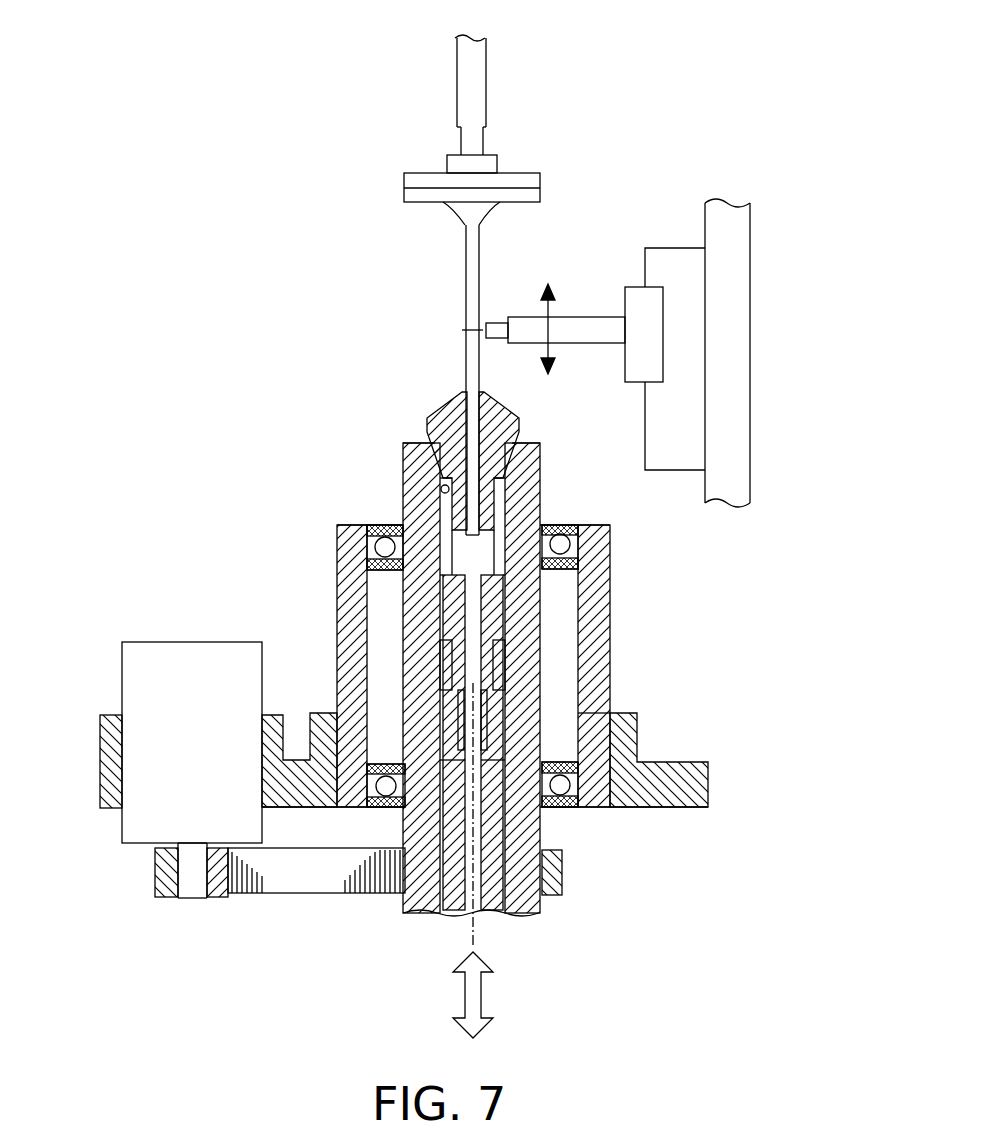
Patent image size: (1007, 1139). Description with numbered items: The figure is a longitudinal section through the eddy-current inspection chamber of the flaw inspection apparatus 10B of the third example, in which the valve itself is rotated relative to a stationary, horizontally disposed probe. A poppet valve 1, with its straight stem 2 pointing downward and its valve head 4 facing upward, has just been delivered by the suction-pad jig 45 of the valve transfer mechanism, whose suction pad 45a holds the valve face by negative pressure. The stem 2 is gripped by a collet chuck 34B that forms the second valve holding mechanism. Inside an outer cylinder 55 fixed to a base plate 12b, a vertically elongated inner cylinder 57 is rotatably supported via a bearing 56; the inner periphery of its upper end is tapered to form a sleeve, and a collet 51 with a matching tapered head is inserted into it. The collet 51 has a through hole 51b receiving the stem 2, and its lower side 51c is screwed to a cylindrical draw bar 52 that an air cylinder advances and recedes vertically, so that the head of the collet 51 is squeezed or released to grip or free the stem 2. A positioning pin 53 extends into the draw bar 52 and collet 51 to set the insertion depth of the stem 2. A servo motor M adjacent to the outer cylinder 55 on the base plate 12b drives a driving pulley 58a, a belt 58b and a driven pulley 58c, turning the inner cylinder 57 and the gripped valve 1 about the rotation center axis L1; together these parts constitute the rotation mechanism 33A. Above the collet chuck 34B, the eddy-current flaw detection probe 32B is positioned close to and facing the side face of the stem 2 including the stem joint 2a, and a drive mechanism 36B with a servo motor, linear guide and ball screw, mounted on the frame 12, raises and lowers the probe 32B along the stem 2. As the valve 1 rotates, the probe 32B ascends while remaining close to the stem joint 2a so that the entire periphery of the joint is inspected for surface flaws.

The apparatus for flaw inspection 10B is at (242, 43).
The suction-pad jig 45 is at (523, 112).
The suction pad 45a is at (542, 193).
The valve head 4 is at (453, 212).
The poppet valve 1 is at (487, 239).
The stem 2 is at (462, 290).
The stem joint 2a is at (466, 330).
The eddy-current flaw detection probe 32B is at (496, 318).
The drive mechanism 36B is at (675, 335).
The frame 12 is at (752, 428).
The collet chuck 34B is at (275, 332).
The collet 51 is at (430, 400).
The inner cylinder 57 is at (430, 440).
The through hole 51b is at (440, 488).
The lower side of collet 51c is at (500, 654).
The positioning pin 53 is at (482, 738).
The draw bar 52 is at (545, 752).
The outer cylinder 55 is at (612, 530).
The bearing 56 is at (367, 555).
The servo motor M is at (140, 683).
The base plate 12b is at (692, 760).
The driving pulley 58a is at (155, 878).
The belt 58b is at (303, 880).
The driven pulley 58c is at (564, 890).
The rotation center axis L1 is at (478, 925).
The rotation mechanism 33A is at (312, 506).